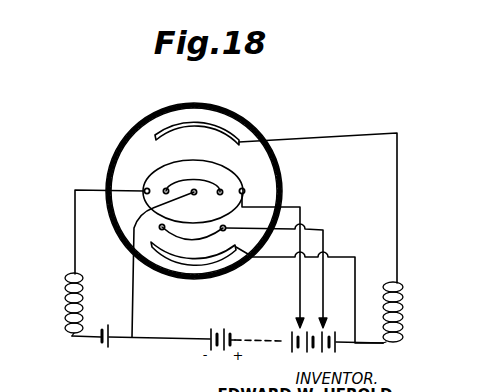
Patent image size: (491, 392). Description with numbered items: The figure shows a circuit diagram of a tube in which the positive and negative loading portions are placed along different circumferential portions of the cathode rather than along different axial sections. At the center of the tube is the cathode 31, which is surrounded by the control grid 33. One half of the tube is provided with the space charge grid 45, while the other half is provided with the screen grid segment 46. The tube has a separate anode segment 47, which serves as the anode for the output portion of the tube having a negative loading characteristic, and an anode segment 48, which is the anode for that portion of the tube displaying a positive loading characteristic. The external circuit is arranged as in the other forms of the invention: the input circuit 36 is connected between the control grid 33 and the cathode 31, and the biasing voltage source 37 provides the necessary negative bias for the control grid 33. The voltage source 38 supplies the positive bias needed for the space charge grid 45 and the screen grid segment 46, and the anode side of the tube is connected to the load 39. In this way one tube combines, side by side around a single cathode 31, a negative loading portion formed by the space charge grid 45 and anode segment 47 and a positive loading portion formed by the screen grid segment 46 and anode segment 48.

The cathode 31 is at (194, 189).
The control grid 33 is at (226, 163).
The input circuit 36 is at (66, 305).
The biasing voltage source 37 is at (103, 353).
The voltage source 38 is at (262, 333).
The load 39 is at (382, 298).
The space charge grid 45 is at (221, 190).
The screen grid segment 46 is at (208, 238).
The anode segment 47 is at (218, 131).
The anode segment 48 is at (180, 238).